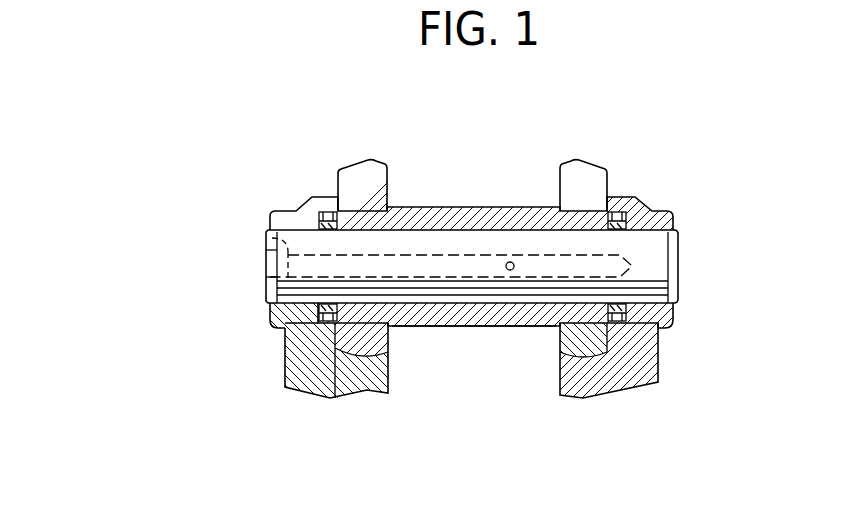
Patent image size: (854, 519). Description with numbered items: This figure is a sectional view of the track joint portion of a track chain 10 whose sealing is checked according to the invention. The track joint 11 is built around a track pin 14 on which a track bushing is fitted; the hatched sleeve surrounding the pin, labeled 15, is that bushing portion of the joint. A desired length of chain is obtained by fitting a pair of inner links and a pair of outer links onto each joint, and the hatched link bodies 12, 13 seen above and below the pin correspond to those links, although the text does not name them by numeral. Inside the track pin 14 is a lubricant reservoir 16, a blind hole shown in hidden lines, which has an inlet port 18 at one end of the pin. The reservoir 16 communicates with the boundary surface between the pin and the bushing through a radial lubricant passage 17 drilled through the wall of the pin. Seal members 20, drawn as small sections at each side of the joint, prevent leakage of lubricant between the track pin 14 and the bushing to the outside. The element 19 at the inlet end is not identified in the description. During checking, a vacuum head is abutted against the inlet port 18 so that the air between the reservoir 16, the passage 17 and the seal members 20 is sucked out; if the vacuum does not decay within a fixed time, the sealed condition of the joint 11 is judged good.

The track chain 10 is at (657, 200).
The track joint 11 is at (470, 330).
The upper roller 12 is at (340, 190).
The lower roller 13 is at (298, 352).
The track pin 14 is at (520, 292).
The hub bottom surface 15 is at (435, 327).
The lubricant reservoir 16 is at (450, 253).
The lubricant passage 17 is at (509, 262).
The inlet port 18 is at (282, 247).
The slot 19 is at (282, 268).
The seal members 20 is at (337, 350).